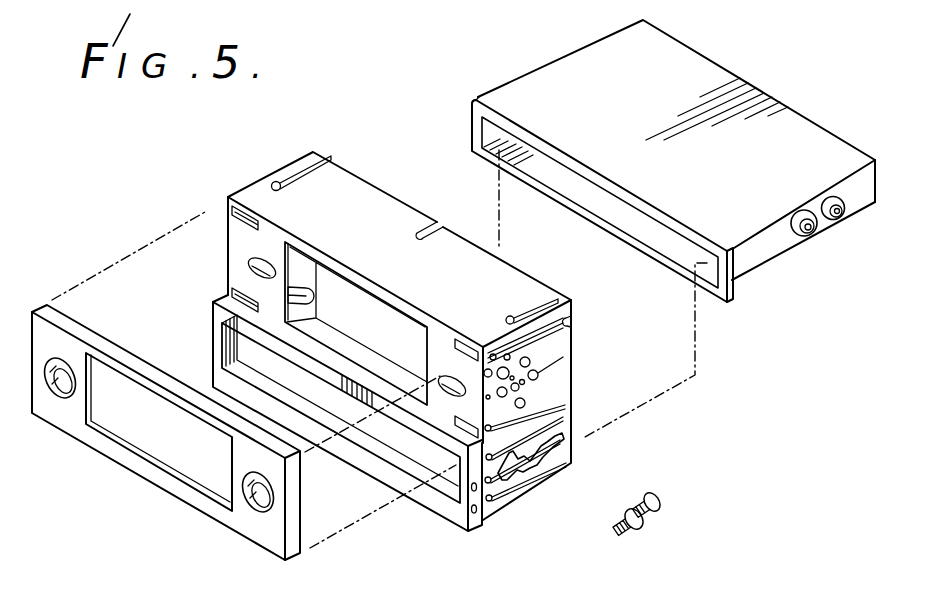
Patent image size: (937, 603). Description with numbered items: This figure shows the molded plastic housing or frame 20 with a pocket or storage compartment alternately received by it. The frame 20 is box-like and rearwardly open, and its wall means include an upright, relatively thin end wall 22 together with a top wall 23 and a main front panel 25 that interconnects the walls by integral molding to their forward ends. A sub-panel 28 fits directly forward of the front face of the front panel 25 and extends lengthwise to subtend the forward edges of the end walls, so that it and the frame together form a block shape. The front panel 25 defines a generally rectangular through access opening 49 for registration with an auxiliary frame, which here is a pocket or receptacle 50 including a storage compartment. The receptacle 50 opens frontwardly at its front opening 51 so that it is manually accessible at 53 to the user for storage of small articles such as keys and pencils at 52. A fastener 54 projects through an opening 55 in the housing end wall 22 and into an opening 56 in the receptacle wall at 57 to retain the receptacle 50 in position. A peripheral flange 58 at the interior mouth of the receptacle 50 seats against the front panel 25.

The housing or frame 20 is at (258, 169).
The end wall 22 is at (561, 426).
The top wall 23 is at (399, 332).
The front panel 25 is at (448, 506).
The sub-panel 28 is at (201, 532).
The access opening 49 is at (410, 447).
The receptacle 50 is at (652, 158).
The front opening 51 is at (492, 133).
The storage location 52 is at (562, 170).
The manual access 53 is at (552, 171).
The fastener 54 is at (648, 516).
The opening 55 is at (543, 445).
The opening 56 is at (808, 236).
The receptacle wall 57 is at (870, 177).
The peripheral flange 58 is at (470, 118).